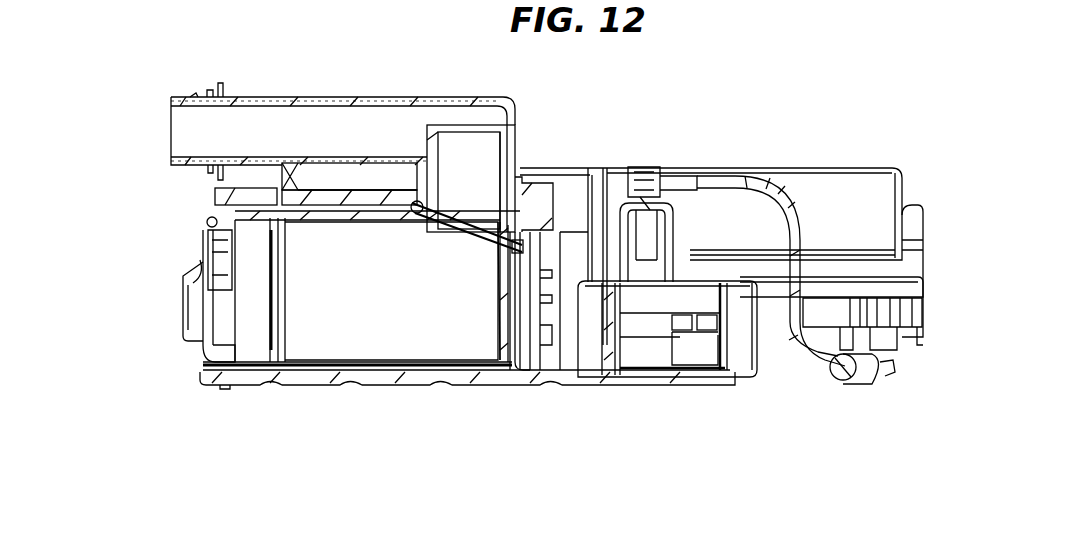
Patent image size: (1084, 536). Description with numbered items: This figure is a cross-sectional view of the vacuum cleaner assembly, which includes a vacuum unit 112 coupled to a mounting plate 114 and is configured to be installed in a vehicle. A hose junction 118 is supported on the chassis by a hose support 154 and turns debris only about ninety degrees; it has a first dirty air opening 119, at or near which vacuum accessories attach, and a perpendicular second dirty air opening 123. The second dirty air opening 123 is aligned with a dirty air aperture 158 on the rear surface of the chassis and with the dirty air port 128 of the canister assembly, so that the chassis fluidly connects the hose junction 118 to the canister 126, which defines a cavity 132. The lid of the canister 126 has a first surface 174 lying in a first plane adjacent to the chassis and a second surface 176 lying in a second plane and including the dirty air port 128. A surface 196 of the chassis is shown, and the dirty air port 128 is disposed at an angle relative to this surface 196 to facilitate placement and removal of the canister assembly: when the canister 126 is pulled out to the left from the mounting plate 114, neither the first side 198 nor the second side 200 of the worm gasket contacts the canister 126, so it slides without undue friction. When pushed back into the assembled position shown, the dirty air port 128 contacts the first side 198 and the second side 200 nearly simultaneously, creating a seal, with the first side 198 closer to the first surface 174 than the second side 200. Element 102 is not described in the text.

The vacuum unit 112 is at (817, 193).
The mounting plate 114 is at (388, 386).
The hose junction 118 is at (322, 127).
The first dirty air opening 119 is at (190, 137).
The second dirty air opening 123 is at (473, 150).
The canister 126 is at (300, 371).
The dirty air port 128 is at (488, 207).
The cavity 132 is at (358, 282).
The hose support 154 is at (283, 170).
The dirty air aperture 158 is at (468, 207).
The first surface 174 is at (410, 211).
The second surface 176 is at (418, 213).
The surface 196 is at (411, 204).
The first side 198 is at (412, 203).
The second side 200 is at (518, 240).
The top band 102 is at (370, 195).